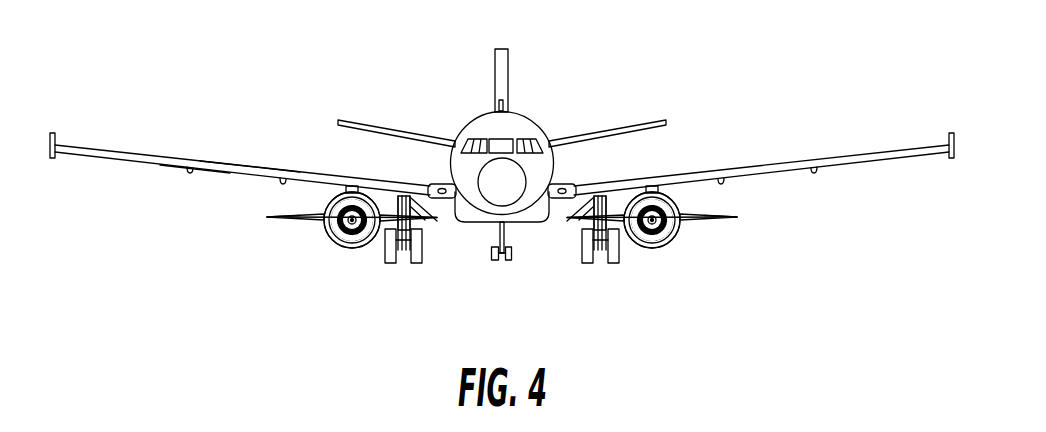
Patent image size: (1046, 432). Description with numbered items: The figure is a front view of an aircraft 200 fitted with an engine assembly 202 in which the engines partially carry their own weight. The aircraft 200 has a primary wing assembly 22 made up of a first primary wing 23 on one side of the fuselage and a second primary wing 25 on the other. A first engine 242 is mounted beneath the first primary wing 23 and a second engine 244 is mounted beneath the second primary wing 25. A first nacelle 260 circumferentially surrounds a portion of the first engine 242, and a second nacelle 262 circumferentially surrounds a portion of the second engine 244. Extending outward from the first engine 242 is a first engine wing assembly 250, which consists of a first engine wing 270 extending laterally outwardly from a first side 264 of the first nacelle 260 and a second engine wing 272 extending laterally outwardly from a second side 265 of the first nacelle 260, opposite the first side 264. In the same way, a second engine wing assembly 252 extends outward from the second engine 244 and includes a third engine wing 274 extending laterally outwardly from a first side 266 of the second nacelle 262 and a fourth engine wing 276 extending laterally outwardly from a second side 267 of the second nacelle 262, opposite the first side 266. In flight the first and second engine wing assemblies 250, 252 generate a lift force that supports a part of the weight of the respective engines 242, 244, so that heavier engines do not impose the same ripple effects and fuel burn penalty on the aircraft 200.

The aircraft 200 is at (723, 72).
The engine assembly 202 is at (185, 213).
The primary wing assembly 22 is at (195, 142).
The first primary wing 23 is at (241, 166).
The second primary wing 25 is at (824, 157).
The first engine 242 is at (337, 247).
The second engine 244 is at (668, 245).
The first engine wing assembly 250 is at (245, 277).
The second engine wing assembly 252 is at (773, 250).
The first nacelle 260 is at (357, 249).
The second nacelle 262 is at (651, 249).
The first side of the first nacelle 264 is at (327, 235).
The first side of the second nacelle 266 is at (679, 235).
The second side of the first nacelle 265 is at (396, 240).
The second side of the second nacelle 267 is at (608, 240).
The first engine wing 270 is at (297, 214).
The third engine wing 274 is at (709, 214).
The second engine wing 272 is at (400, 199).
The fourth engine wing 276 is at (604, 199).